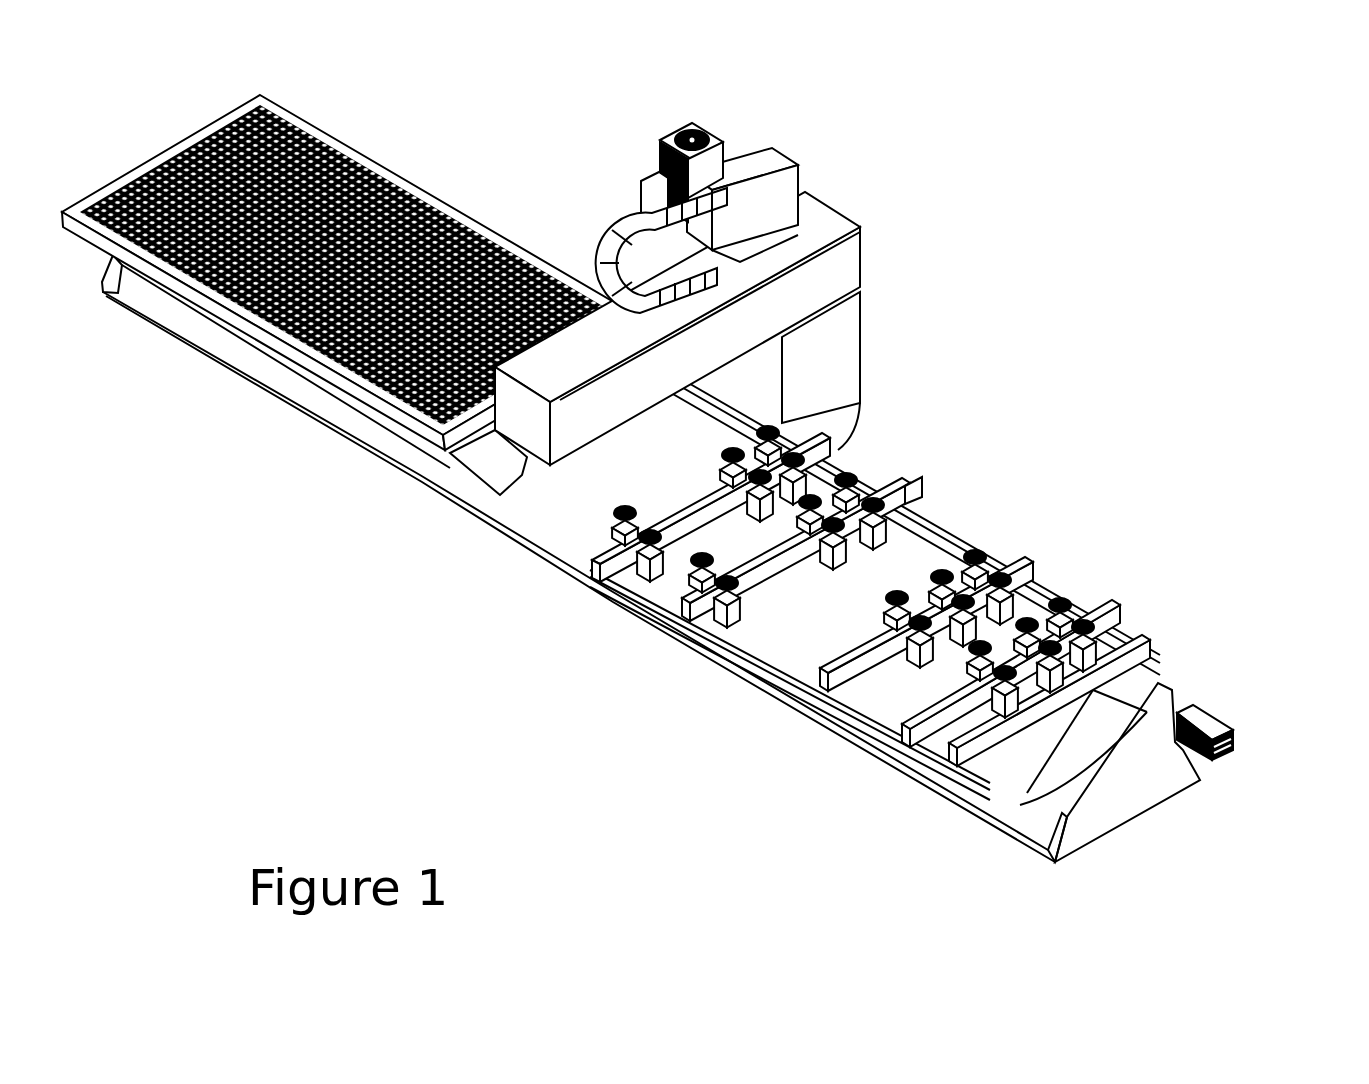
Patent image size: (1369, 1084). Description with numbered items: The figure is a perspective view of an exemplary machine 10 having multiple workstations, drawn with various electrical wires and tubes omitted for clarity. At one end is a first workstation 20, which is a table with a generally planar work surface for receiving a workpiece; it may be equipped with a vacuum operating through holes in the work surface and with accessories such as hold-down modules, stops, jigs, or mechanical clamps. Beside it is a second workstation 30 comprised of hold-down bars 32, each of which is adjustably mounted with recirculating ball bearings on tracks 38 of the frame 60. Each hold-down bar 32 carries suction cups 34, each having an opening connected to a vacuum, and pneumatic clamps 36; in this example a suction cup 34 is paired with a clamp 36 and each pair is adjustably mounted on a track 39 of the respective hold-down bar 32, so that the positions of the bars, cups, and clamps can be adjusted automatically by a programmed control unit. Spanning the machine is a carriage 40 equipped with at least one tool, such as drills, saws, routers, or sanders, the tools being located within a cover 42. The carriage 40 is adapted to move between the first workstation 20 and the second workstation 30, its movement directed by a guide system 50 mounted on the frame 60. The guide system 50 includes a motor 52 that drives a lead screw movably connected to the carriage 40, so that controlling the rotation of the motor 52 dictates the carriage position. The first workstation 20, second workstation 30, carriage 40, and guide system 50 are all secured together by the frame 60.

The machine 10 is at (706, 501).
The first workstation 20 is at (392, 170).
The second workstation 30 is at (863, 623).
The hold-down bar 32 is at (829, 664).
The suction cup 34 is at (854, 574).
The clamp 36 is at (1035, 555).
The tracks 38 is at (1093, 716).
The track 39 is at (970, 476).
The carriage 40 is at (833, 205).
The cover 42 is at (444, 507).
The guide system 50 is at (1264, 687).
The motor 52 is at (1235, 740).
The frame 60 is at (1125, 820).